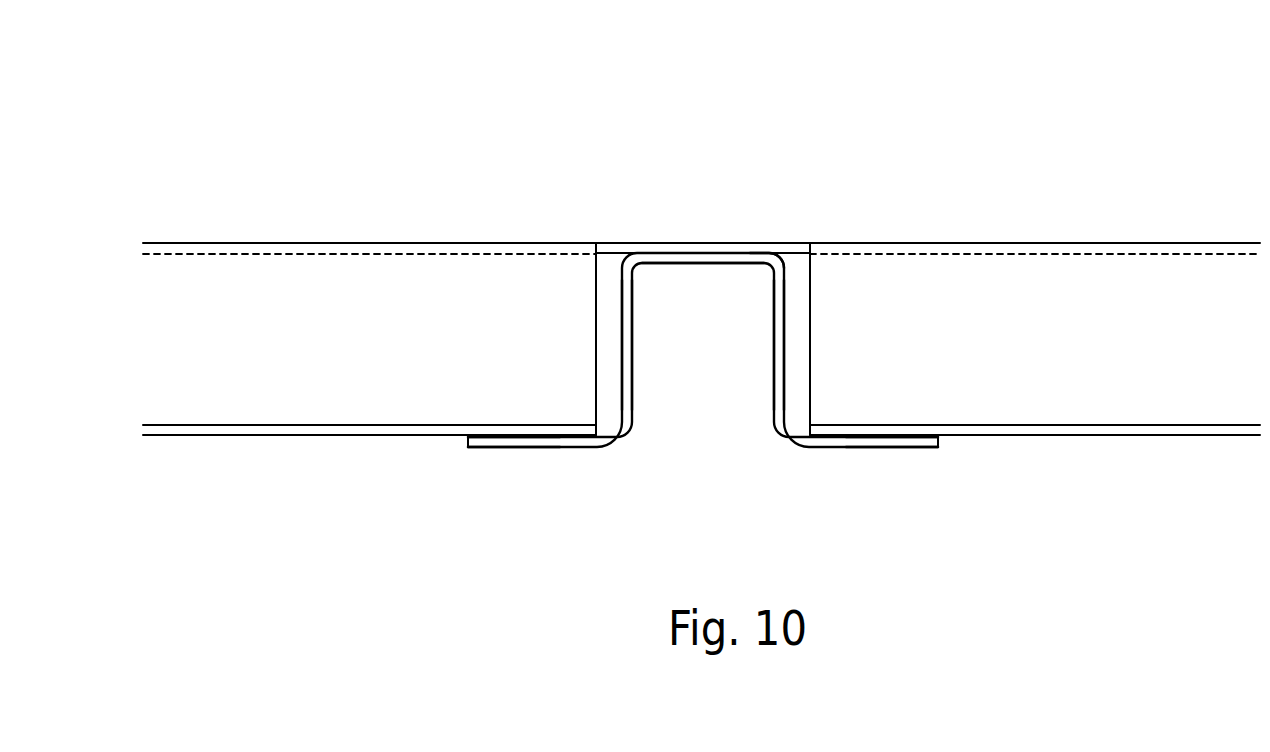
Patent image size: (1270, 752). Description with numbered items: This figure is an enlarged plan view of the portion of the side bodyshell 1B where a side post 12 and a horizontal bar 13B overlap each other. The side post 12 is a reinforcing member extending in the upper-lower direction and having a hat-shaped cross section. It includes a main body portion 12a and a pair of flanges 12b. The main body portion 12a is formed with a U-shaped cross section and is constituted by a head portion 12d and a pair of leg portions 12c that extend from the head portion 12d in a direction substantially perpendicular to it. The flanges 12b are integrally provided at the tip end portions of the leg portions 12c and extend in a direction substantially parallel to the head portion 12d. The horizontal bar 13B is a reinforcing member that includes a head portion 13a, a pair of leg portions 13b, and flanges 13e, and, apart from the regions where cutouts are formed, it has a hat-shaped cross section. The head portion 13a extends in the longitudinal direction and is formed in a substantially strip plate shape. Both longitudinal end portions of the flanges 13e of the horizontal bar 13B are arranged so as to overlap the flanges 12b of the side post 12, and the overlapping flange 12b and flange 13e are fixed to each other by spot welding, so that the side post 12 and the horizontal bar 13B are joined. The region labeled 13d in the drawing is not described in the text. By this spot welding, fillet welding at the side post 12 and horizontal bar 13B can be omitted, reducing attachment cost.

The side bodyshell 1B is at (1078, 108).
The side post 12 is at (606, 443).
The main body portion 12a is at (697, 263).
The flange 12b is at (481, 446).
The leg portion 12c is at (624, 328).
The head portion 12d is at (743, 258).
The horizontal bar 13B is at (1072, 268).
The head portion 13a is at (708, 248).
The leg portion 13b is at (287, 410).
The edge portion 13d is at (643, 242).
The flange 13e is at (556, 432).